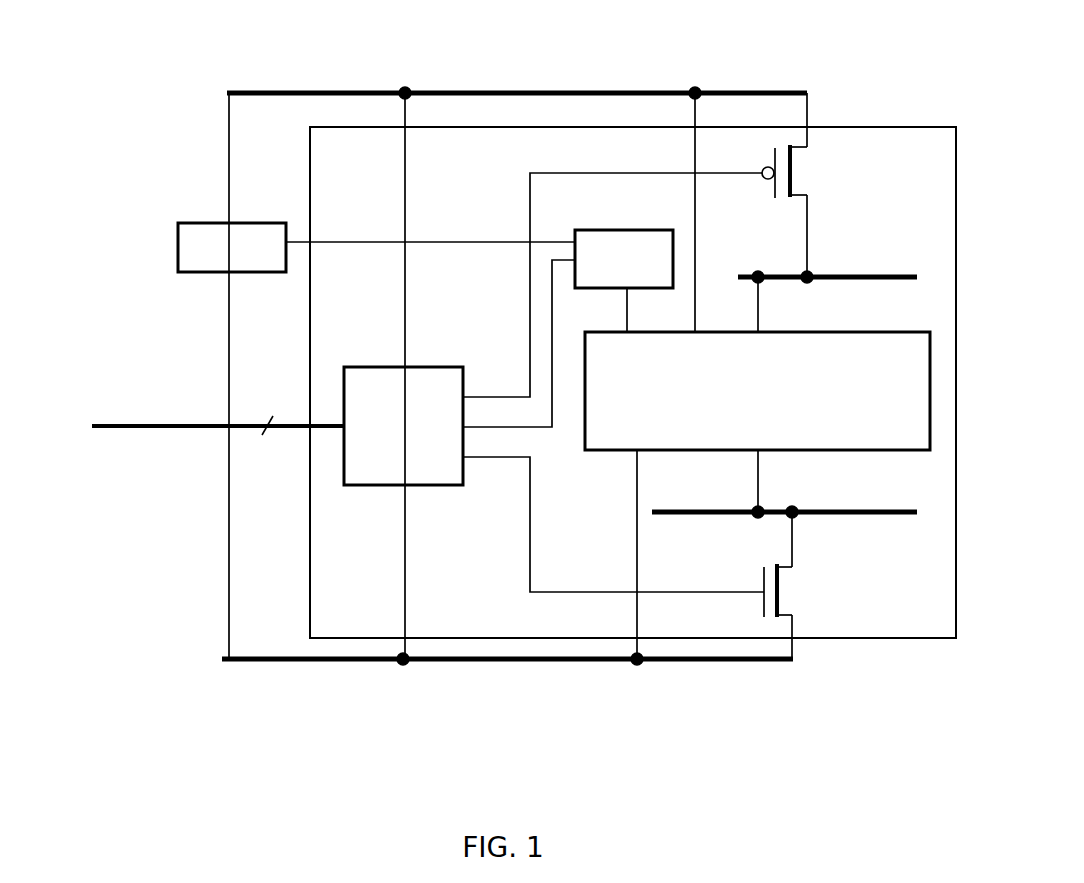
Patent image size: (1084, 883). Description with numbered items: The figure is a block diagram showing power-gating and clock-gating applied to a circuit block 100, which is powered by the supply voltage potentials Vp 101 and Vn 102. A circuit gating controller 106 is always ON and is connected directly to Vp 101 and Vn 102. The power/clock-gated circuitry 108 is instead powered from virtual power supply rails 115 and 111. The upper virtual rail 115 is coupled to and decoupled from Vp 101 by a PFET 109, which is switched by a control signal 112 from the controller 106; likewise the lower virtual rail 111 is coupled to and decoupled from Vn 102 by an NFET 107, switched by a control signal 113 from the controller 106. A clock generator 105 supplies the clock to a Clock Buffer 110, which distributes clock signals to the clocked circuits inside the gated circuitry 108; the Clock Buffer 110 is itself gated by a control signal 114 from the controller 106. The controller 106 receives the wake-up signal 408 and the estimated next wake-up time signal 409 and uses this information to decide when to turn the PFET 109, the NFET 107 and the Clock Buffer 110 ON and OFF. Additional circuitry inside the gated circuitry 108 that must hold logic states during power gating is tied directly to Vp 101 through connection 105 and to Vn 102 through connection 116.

The circuit block 100 is at (893, 127).
The power supply voltage potential Vp 101 is at (276, 90).
The power supply voltage potential Vn 102 is at (507, 684).
The clock generator 105 is at (208, 222).
The circuit gating controller 106 is at (432, 487).
The NFET 107 is at (790, 590).
The power/clock-gated circuitry 108 is at (615, 452).
The PFET 109 is at (795, 157).
The Clock Buffer 110 is at (625, 230).
The virtual power supply rail 111 is at (692, 517).
The control signal 112 is at (528, 230).
The control signal 113 is at (530, 553).
The control signal 114 is at (538, 428).
The virtual power supply rail 115 is at (848, 277).
The connection 116 is at (633, 577).
The wake-up signal WK(1)p 408 is at (80, 393).
The estimated next wake-up signal time EWK(1)p+1 409 is at (148, 395).